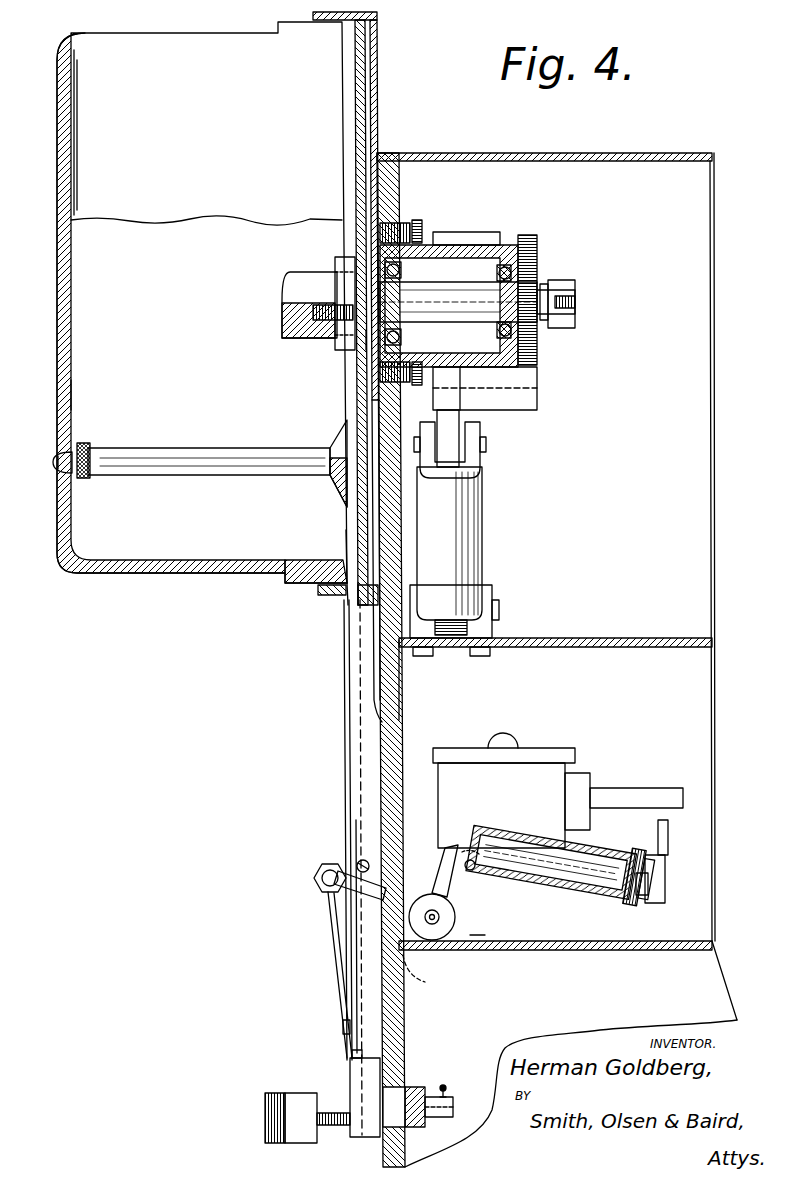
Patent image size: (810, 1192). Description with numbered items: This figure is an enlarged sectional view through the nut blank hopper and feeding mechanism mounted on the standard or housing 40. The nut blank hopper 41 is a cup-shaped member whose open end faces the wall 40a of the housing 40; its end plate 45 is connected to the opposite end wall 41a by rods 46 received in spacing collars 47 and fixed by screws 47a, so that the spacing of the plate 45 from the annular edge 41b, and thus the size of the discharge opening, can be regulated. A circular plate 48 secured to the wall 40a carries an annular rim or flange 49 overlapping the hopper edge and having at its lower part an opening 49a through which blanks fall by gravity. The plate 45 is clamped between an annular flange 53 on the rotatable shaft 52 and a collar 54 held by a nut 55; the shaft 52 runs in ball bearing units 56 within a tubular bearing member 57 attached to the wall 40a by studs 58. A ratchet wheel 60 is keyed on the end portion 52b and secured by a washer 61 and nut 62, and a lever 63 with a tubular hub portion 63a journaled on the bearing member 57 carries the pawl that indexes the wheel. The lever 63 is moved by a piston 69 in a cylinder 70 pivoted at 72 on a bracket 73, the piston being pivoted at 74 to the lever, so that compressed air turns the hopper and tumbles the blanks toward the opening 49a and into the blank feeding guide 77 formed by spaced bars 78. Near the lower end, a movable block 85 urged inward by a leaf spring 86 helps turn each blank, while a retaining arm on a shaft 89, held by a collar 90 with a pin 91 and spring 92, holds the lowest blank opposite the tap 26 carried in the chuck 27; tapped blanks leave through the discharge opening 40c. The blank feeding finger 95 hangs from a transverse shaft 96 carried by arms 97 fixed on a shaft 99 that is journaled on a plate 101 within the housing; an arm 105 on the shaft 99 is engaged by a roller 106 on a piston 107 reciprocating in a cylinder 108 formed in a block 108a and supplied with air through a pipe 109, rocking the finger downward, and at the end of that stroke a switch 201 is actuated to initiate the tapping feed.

The tap 26 is at (330, 1113).
The chuck 27 is at (292, 1095).
The standard or housing 40 is at (655, 153).
The wall of the housing 40a is at (398, 712).
The discharge opening 40c is at (431, 975).
The nut blank hopper 41 is at (175, 575).
The end wall 41a is at (72, 397).
The annular edge 41b is at (348, 560).
The end plate 45 is at (360, 375).
The rods 46 is at (206, 448).
The spacing collars 47 is at (86, 443).
The screws 47a is at (55, 462).
The circular plate 48 is at (380, 106).
The annular rim or flange 49 is at (328, 595).
The opening 49a is at (352, 605).
The rotatable shaft 52 is at (453, 250).
The end portion of the shaft 52b is at (535, 290).
The annular flange 53 is at (364, 340).
The collar 54 is at (337, 262).
The nut 55 is at (283, 280).
The ball bearing units 56 is at (508, 262).
The tubular bearing member 57 is at (472, 262).
The studs 58 is at (418, 220).
The ratchet wheel 60 is at (538, 248).
The washer 61 is at (556, 290).
The nut 62 is at (578, 300).
The lever 63 is at (460, 415).
The tubular hub portion 63a is at (522, 390).
The piston 69 is at (470, 467).
The cylinder 70 is at (470, 550).
The pivot 72 is at (500, 612).
The bracket 73 is at (490, 632).
The pivot 74 is at (488, 446).
The blank feeding guide 77 is at (340, 768).
The bars 78 is at (358, 795).
The movable block 85 is at (350, 1067).
The leaf spring 86 is at (350, 1010).
The shaft 89 is at (454, 1105).
The collar 90 is at (418, 1087).
The pin 91 is at (448, 1088).
The spring 92 is at (445, 1085).
The blank feeding finger 95 is at (338, 925).
The transverse shaft 96 is at (330, 870).
The arms 97 is at (420, 896).
The shaft 99 is at (434, 922).
The plate 101 is at (668, 944).
The arm 105 is at (445, 852).
The roller 106 is at (470, 858).
The piston 107 is at (535, 885).
The cylinder 108 is at (578, 905).
The block 108a is at (490, 942).
The pipe 109 is at (660, 845).
The switch 201 is at (530, 775).